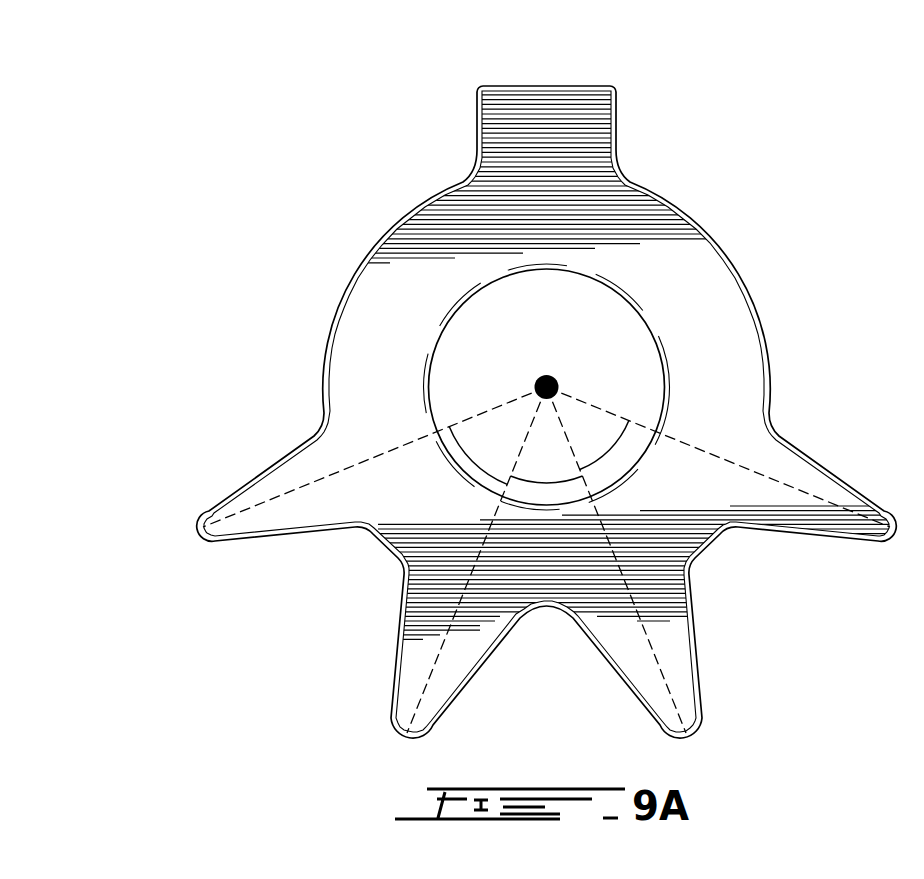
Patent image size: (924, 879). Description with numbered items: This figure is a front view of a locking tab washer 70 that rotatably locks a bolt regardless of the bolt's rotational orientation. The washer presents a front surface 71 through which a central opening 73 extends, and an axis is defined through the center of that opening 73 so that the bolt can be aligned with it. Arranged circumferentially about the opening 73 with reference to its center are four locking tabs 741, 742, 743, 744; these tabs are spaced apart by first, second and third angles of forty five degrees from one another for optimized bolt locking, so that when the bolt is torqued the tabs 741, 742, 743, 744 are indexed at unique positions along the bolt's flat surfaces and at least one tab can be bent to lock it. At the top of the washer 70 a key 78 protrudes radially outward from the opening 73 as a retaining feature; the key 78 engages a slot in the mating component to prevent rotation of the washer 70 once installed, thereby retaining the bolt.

The locking tab washer 70 is at (200, 160).
The front surface 71 is at (703, 297).
The central opening 73 is at (597, 310).
The key 78 is at (566, 118).
The locking tab 741 is at (855, 495).
The locking tab 742 is at (686, 677).
The locking tab 743 is at (408, 677).
The locking tab 744 is at (247, 498).